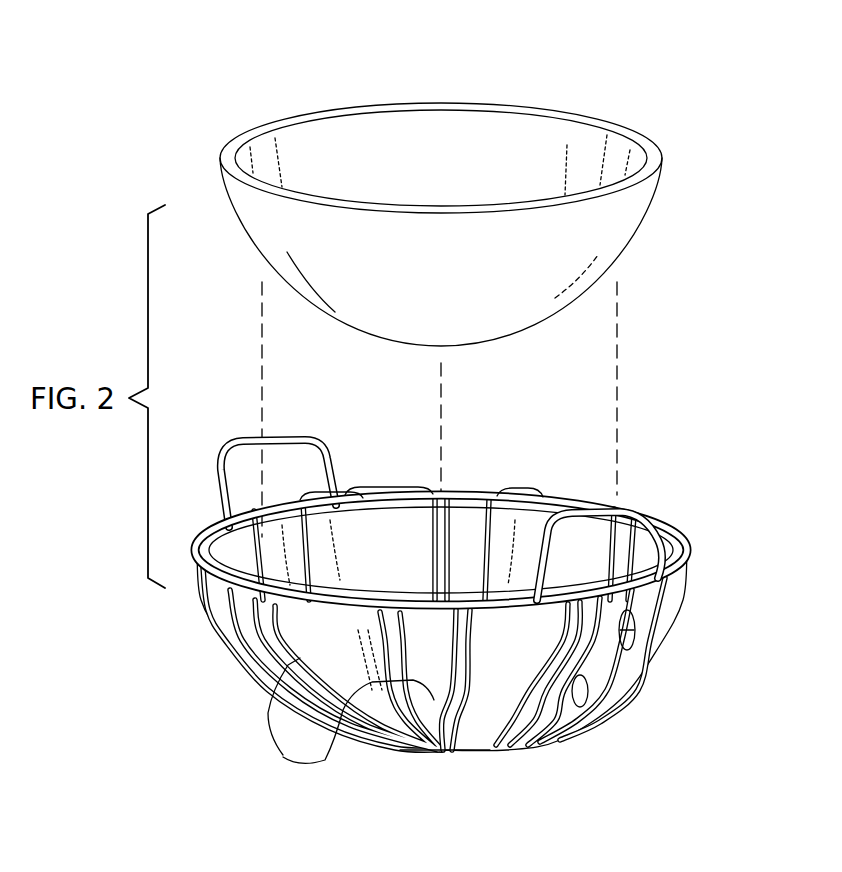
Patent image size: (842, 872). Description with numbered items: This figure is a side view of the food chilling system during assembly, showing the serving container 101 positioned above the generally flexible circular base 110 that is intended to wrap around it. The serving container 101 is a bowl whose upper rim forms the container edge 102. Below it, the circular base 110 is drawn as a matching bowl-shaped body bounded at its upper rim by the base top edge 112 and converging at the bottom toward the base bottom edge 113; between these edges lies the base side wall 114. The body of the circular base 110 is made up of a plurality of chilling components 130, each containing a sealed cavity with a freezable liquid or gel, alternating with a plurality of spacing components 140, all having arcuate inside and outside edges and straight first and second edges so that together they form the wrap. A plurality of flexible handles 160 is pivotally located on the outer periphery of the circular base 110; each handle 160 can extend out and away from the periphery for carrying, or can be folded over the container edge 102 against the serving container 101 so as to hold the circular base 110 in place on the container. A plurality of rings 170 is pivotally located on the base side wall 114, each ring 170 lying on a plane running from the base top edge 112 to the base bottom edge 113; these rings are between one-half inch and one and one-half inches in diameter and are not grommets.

The serving container 101 is at (441, 178).
The container edge 102 is at (456, 102).
The circular base 110 is at (445, 599).
The base top edge 112 is at (686, 556).
The base bottom edge 113 is at (465, 752).
The base side wall 114 is at (208, 610).
The chilling component 130 is at (505, 708).
The spacing component 140 is at (283, 755).
The flexible handle 160 is at (636, 507).
The ring 170 is at (590, 692).